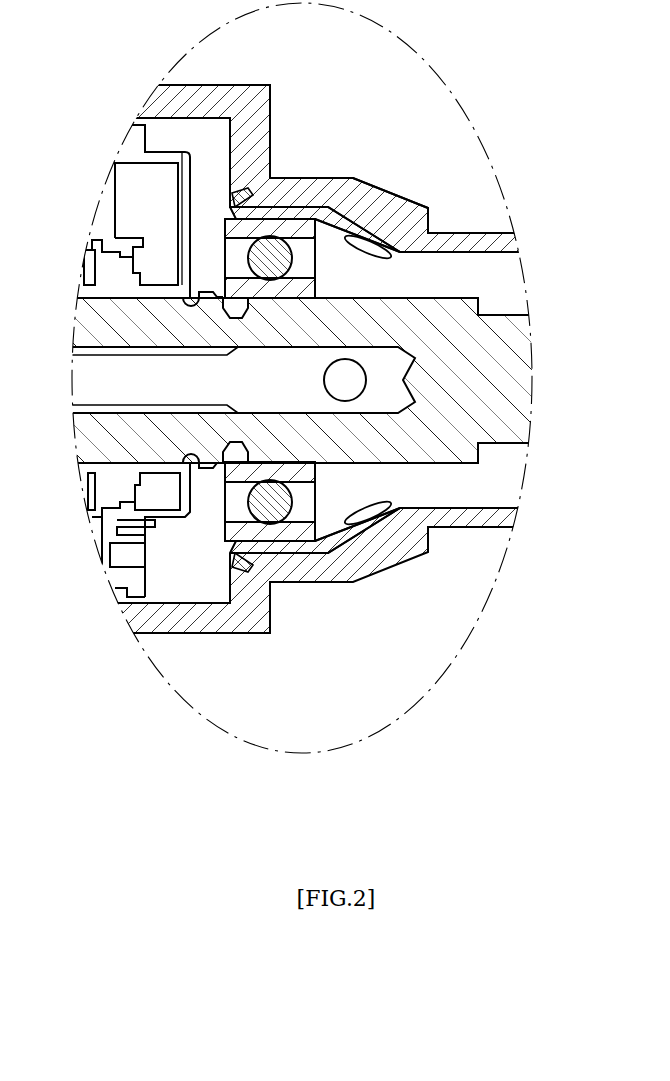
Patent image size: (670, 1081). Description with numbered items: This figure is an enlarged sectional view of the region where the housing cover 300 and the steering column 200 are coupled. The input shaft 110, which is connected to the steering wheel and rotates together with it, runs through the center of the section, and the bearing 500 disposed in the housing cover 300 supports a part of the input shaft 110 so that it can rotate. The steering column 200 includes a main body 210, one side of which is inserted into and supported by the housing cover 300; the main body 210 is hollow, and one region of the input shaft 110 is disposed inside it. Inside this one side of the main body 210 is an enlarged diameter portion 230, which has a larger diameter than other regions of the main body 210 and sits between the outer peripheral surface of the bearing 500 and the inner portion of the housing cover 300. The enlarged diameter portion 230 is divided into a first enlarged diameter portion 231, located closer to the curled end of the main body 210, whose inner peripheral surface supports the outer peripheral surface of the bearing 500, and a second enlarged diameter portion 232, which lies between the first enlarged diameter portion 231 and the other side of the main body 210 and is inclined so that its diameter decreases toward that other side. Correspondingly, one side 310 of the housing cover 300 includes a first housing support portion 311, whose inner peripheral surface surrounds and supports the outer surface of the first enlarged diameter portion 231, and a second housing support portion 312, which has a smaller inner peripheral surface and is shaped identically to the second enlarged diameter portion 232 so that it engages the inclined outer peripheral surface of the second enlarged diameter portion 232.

The input shaft 110 is at (495, 388).
The steering column 200 is at (368, 168).
The main body 210 is at (500, 244).
The enlarged diameter portion 230 is at (303, 107).
The first enlarged diameter portion 231 is at (297, 218).
The second enlarged diameter portion 232 is at (360, 233).
The housing cover 300 is at (325, 647).
The one side of the housing cover 310 is at (315, 647).
The first housing support portion 311 is at (295, 550).
The second housing support portion 312 is at (372, 532).
The bearing 500 is at (237, 258).